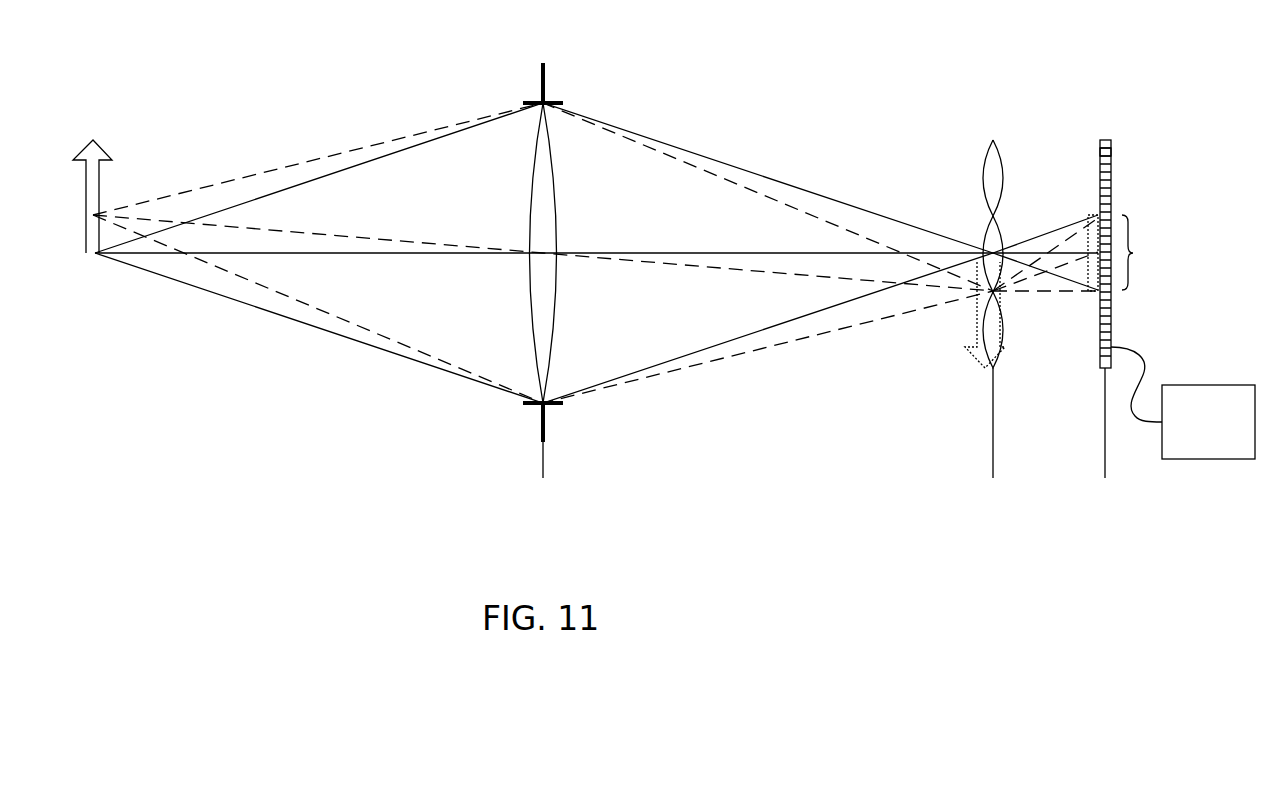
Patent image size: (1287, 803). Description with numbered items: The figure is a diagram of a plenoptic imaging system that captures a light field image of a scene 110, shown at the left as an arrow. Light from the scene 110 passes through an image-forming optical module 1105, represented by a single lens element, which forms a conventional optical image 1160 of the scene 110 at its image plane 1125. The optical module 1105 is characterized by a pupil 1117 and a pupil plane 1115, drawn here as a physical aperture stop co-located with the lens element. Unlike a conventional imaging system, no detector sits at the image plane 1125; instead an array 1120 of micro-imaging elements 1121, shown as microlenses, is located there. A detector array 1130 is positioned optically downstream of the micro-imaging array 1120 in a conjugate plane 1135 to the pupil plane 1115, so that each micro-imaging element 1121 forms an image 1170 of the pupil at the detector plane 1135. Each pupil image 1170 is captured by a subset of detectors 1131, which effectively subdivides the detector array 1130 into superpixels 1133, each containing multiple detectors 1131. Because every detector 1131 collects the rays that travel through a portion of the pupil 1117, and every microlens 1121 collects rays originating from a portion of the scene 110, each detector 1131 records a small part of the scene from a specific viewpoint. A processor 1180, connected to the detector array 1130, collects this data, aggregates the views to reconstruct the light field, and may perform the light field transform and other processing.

The scene 110 is at (97, 187).
The image-forming optical module 1105 is at (515, 219).
The pupil plane 1115 is at (546, 476).
The pupil 1117 is at (526, 423).
The micro-imaging array 1120 is at (994, 239).
The micro-imaging element 1121 is at (1022, 178).
The image plane 1125 is at (997, 439).
The detector array 1130 is at (1107, 239).
The detector 1131 is at (1137, 162).
The superpixel 1133 is at (1158, 252).
The conjugate plane 1135 is at (1111, 439).
The optical image 1160 is at (974, 333).
The image of the pupil 1170 is at (1081, 242).
The processor 1180 is at (1183, 403).